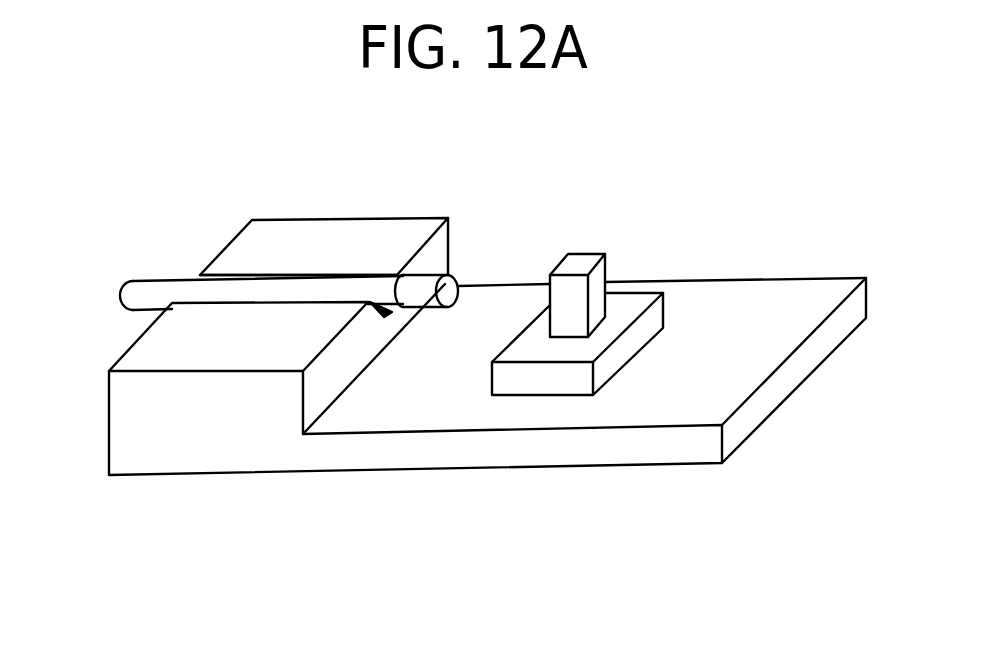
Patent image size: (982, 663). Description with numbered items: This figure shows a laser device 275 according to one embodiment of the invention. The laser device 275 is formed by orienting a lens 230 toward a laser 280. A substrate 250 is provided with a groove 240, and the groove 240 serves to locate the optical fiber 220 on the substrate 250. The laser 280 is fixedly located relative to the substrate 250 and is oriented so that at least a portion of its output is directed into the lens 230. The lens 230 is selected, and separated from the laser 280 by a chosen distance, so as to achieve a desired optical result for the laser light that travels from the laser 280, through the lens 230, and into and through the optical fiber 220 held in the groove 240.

The optical fiber 220 is at (137, 293).
The lens 230 is at (425, 282).
The groove 240 is at (205, 278).
The substrate 250 is at (295, 240).
The laser device 275 is at (170, 523).
The laser 280 is at (585, 256).